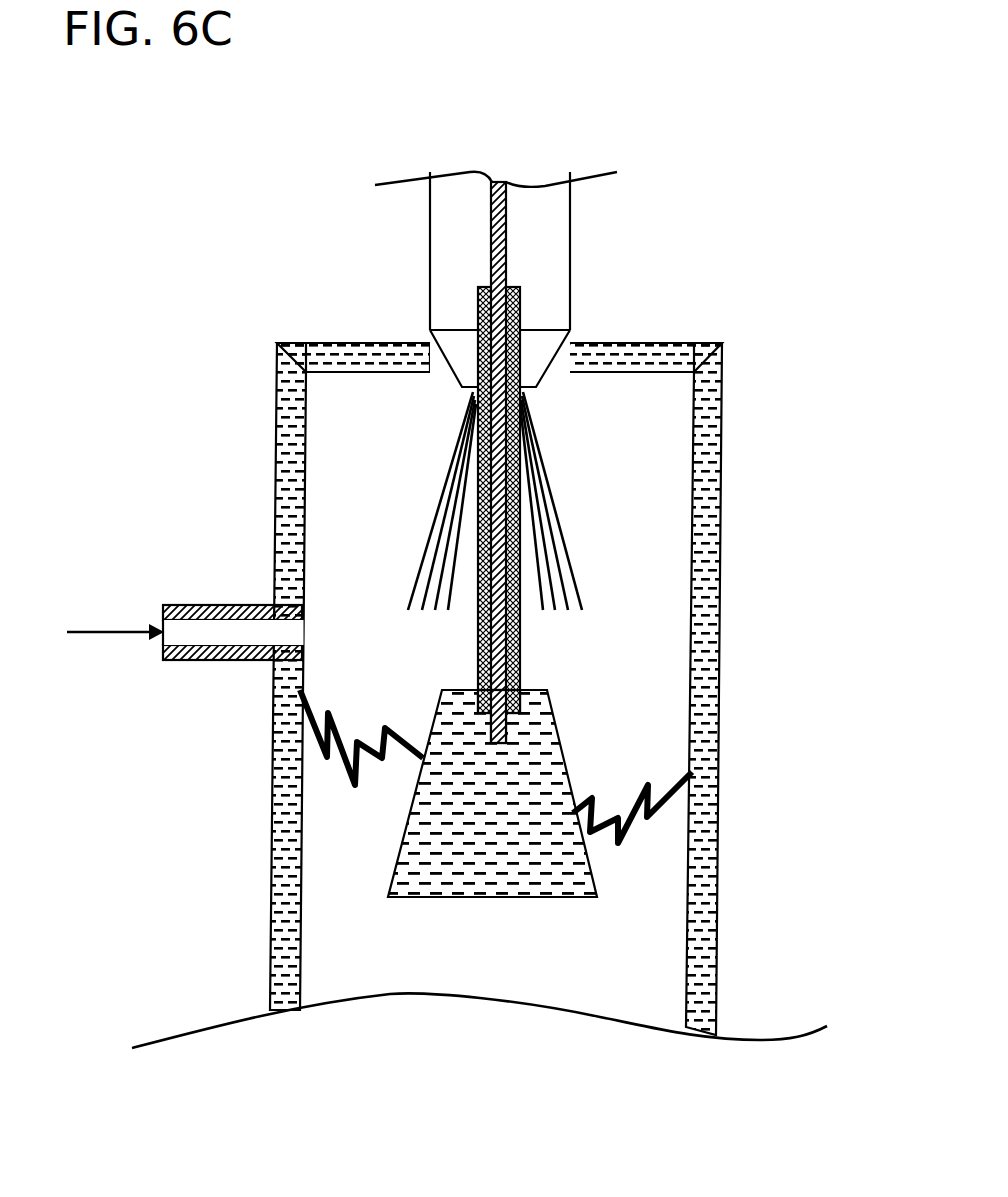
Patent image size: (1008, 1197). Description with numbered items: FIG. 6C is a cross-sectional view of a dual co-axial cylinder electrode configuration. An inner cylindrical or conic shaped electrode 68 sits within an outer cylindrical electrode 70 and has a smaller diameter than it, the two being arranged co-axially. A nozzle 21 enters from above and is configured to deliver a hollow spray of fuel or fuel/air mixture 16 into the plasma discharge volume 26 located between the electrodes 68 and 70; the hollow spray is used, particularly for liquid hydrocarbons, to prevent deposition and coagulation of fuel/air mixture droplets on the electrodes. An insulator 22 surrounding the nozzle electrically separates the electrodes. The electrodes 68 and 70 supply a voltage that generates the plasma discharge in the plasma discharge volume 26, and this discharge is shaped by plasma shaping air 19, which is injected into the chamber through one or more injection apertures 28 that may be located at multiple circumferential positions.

The nozzle 21 is at (457, 343).
The insulator 22 is at (517, 315).
The fuel or fuel/air mixture 16 is at (552, 552).
The injection apertures 28 is at (192, 632).
The plasma shaping air 19 is at (115, 614).
The plasma discharge volume 26 is at (355, 807).
The inner cylindrical electrode 68 is at (438, 857).
The outer cylindrical electrode 70 is at (270, 950).